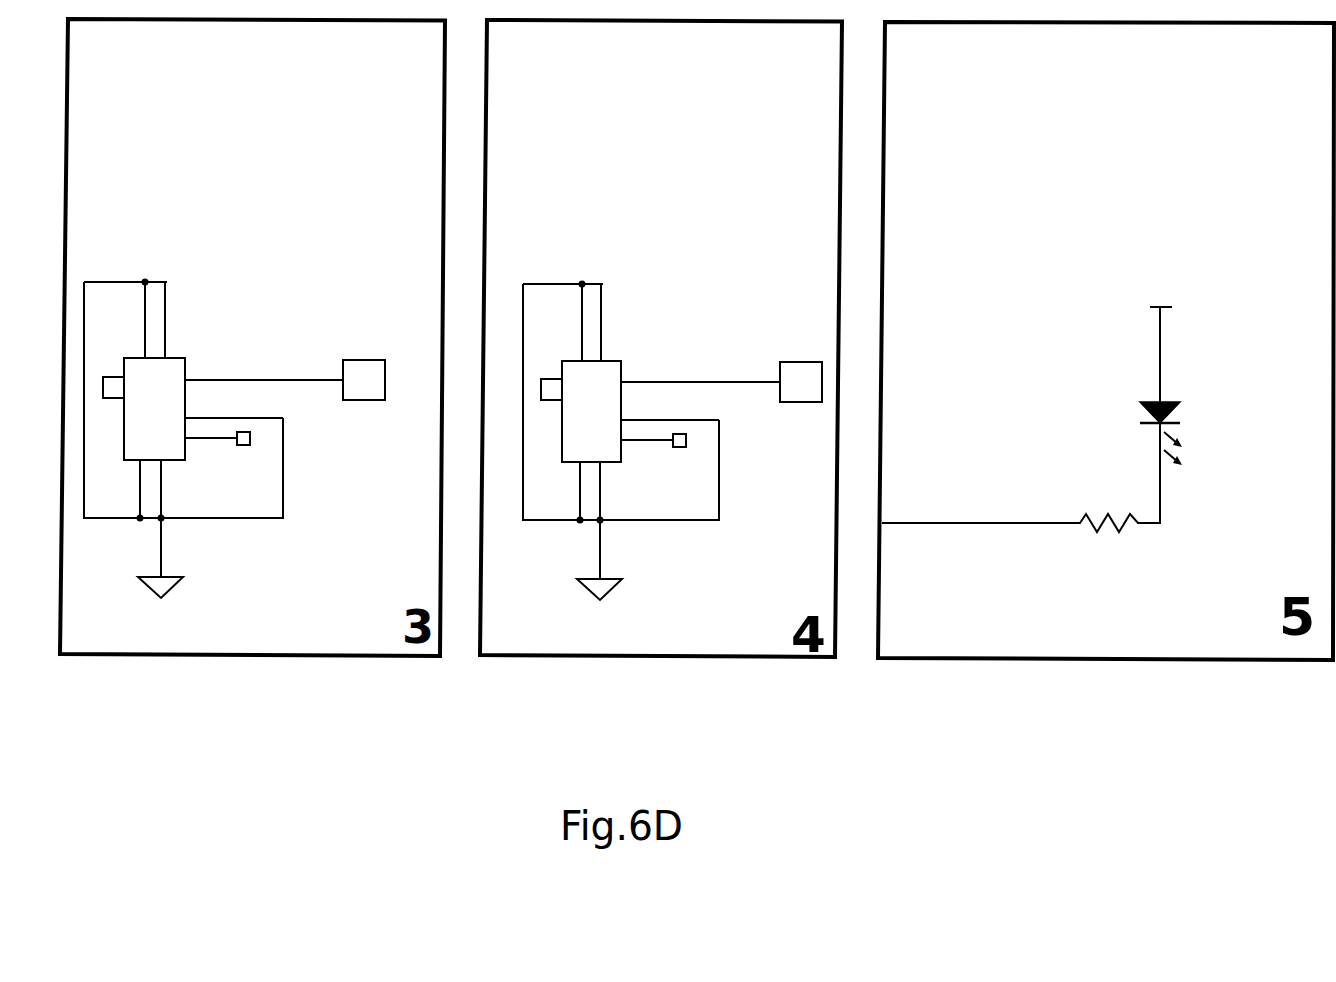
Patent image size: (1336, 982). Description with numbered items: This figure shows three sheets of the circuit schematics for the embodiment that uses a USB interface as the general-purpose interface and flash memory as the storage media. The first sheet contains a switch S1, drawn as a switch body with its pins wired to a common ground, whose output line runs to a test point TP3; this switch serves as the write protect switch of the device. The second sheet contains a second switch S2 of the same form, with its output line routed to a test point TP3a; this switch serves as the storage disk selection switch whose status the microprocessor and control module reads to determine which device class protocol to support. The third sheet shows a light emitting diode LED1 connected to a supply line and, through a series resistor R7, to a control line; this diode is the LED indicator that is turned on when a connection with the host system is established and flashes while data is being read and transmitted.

The switch S1 is at (183, 439).
The switch S2 is at (621, 441).
The test point TP3 is at (285, 368).
The test point TP3a is at (721, 370).
The resistor R7 (680 ohm) R7 is at (1021, 496).
The light emitting diode LED1 is at (1183, 393).